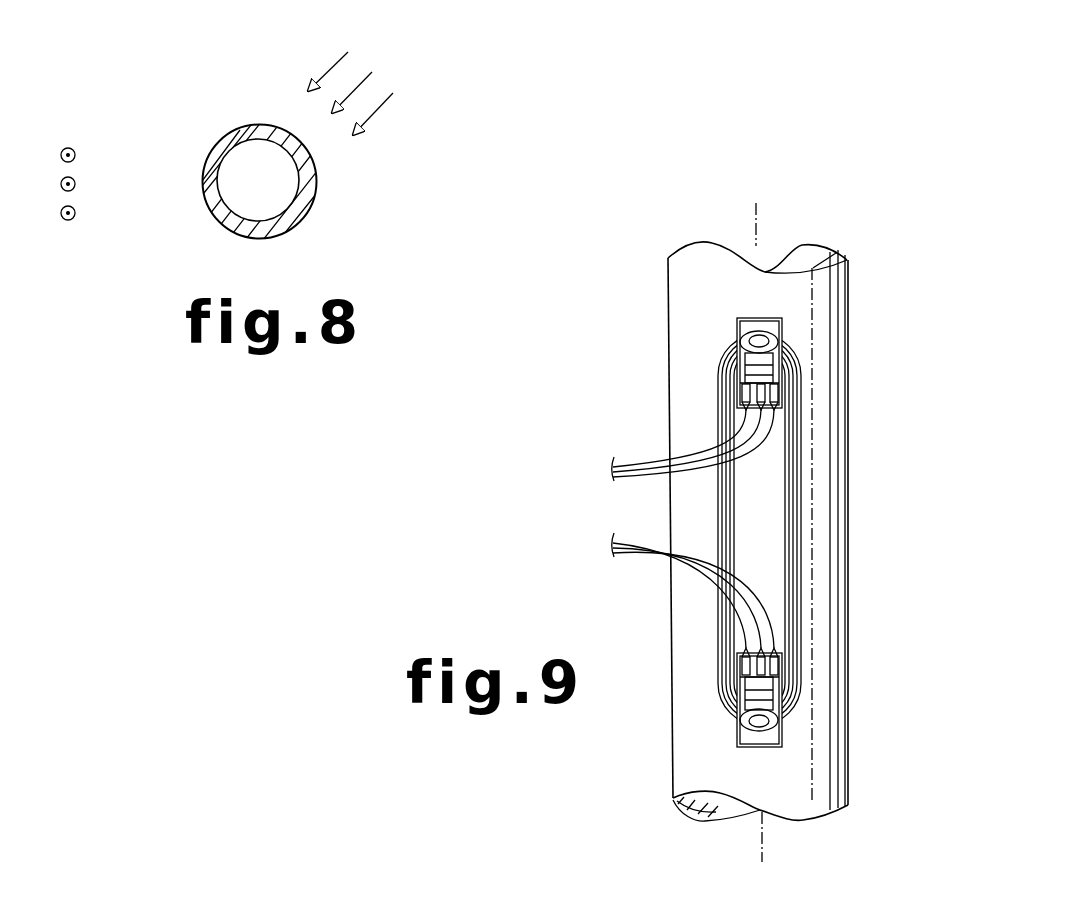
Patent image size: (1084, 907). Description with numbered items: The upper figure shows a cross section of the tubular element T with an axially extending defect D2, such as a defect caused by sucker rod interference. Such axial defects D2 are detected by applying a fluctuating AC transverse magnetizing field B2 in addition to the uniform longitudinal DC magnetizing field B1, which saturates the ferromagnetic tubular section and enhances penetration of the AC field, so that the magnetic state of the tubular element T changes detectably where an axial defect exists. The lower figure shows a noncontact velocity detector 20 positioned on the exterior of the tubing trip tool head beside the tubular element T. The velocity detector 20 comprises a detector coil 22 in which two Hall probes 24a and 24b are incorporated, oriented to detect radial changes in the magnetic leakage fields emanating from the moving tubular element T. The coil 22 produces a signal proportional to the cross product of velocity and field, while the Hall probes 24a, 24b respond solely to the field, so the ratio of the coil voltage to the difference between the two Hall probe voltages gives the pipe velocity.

In FIG. 8, the tubular element T is at (314, 173).
In FIG. 9, the tubular element T is at (662, 316).
In FIG. 8, the axial defect D2 is at (257, 127).
In FIG. 8, the uniform DC magnetizing field B1 is at (89, 184).
In FIG. 8, the fluctuating AC magnetizing field B2 is at (362, 98).
In FIG. 9, the velocity detector 20 is at (824, 462).
In FIG. 9, the velocity detector coil 22 is at (807, 580).
In FIG. 9, the Hall probe 24a is at (776, 345).
In FIG. 9, the Hall probe 24b is at (768, 718).